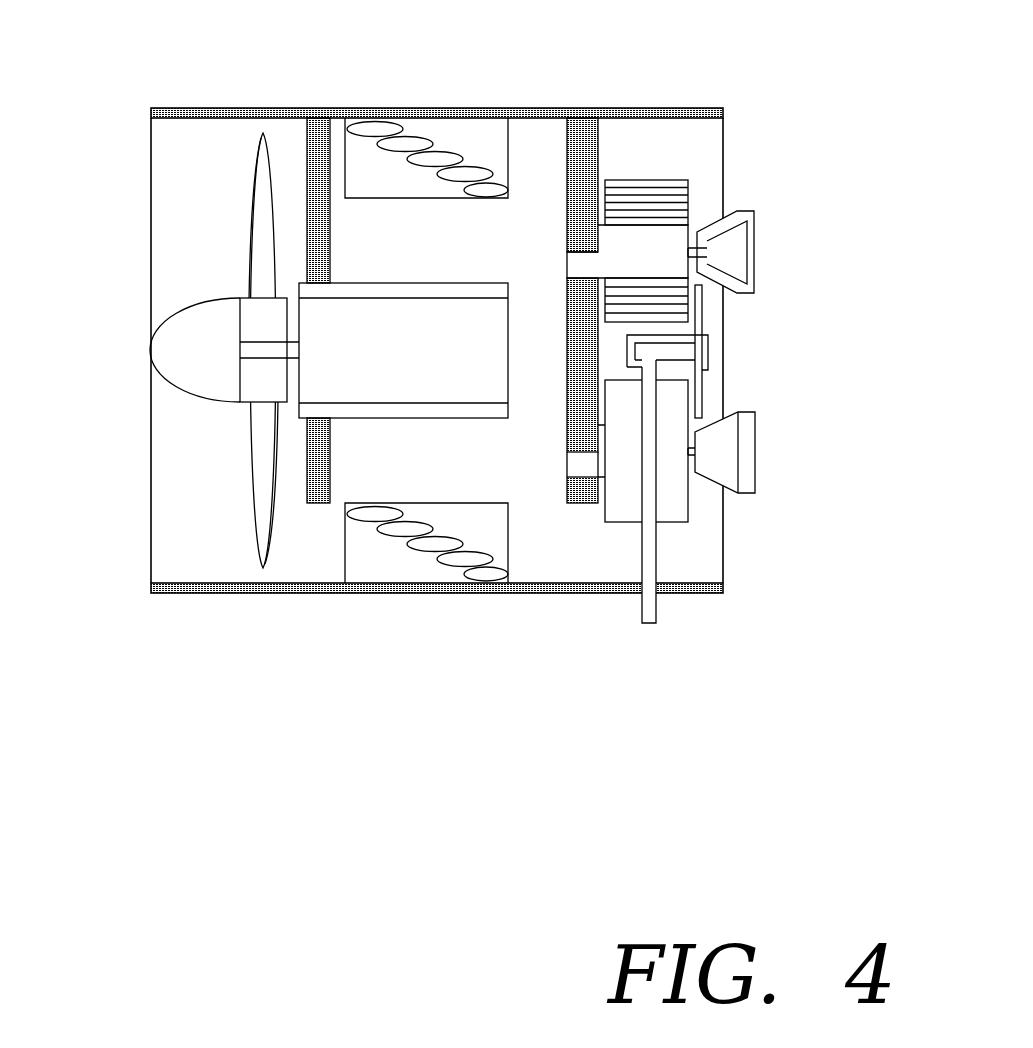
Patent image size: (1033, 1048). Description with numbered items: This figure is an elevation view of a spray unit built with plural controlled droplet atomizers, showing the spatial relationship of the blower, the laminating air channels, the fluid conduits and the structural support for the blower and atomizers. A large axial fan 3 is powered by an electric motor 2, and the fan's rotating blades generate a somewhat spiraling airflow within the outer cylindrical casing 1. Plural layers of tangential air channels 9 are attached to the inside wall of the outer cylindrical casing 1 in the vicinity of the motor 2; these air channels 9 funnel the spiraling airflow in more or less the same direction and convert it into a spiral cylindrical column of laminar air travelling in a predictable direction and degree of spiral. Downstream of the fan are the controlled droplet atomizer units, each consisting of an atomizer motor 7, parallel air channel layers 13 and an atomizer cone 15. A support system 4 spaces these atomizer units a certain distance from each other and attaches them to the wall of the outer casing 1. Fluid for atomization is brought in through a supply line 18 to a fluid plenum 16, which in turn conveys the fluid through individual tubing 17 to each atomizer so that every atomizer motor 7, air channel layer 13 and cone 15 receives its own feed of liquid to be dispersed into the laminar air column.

The outer cylindrical casing 1 is at (278, 110).
The electric motor 2 is at (338, 325).
The axial fan 3 is at (259, 432).
The support system 4 is at (568, 185).
The atomizer motor 7 is at (632, 222).
The air channels 9 is at (448, 133).
The parallel air channel layers 13 is at (666, 180).
The atomizer cone 15 is at (755, 240).
The fluid plenum 16 is at (678, 352).
The tubing 17 is at (702, 308).
The supply line 18 is at (658, 540).